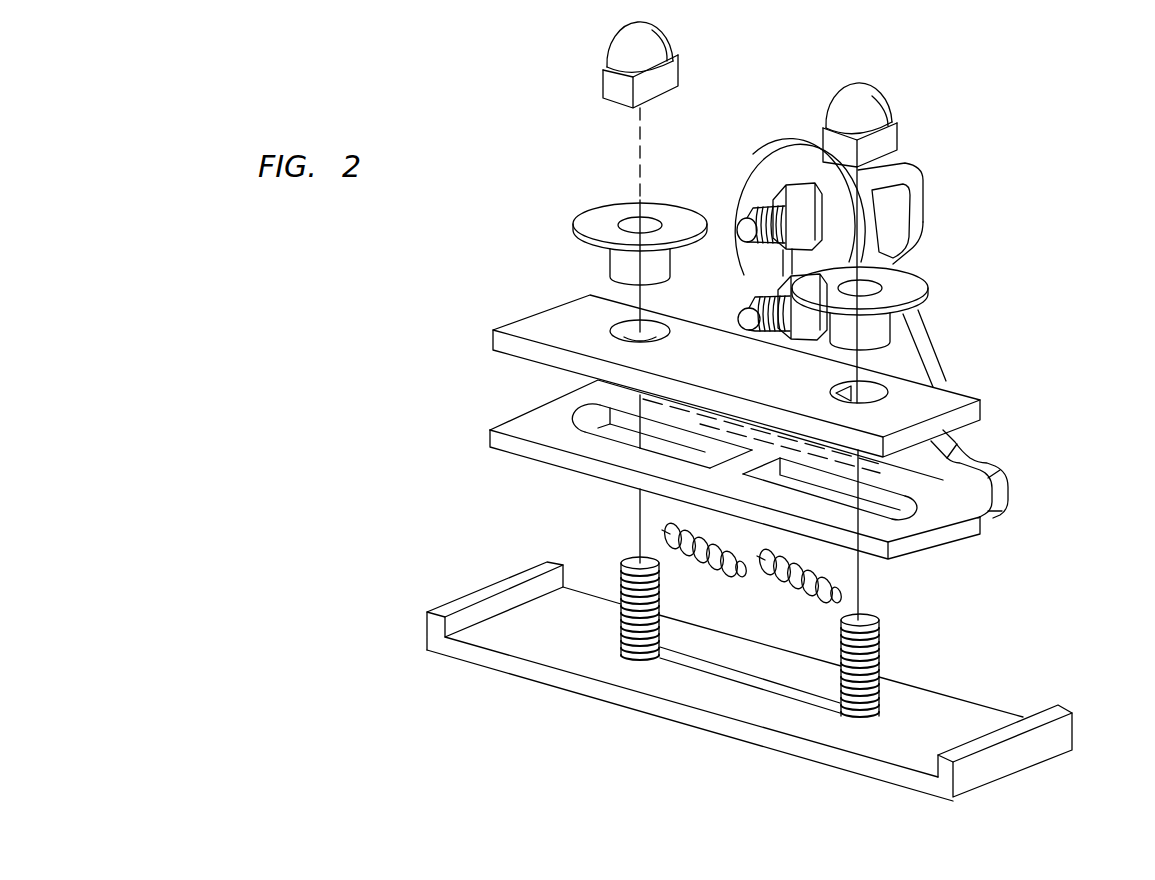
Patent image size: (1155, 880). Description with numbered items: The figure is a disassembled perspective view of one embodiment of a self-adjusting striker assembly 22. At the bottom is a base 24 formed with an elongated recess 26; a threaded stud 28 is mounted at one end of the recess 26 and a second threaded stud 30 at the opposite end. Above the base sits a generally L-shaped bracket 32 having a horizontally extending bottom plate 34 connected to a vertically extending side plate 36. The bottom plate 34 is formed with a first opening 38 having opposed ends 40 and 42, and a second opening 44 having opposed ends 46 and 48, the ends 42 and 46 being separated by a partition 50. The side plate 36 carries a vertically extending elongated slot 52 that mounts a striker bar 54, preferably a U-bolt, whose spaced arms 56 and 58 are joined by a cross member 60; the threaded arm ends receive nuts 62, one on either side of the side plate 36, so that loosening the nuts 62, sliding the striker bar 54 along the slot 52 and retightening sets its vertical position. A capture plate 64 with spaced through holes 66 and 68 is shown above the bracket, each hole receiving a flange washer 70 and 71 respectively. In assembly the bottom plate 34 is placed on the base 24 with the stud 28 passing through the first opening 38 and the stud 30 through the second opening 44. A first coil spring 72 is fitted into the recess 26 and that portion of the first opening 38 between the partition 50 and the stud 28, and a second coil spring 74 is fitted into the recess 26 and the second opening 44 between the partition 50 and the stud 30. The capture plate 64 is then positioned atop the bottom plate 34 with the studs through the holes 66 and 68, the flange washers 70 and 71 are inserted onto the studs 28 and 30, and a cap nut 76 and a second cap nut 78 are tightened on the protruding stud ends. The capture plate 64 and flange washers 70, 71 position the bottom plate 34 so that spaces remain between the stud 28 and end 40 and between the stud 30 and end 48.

The self-adjusting striker assembly 22 is at (1066, 193).
The base 24 is at (374, 596).
The elongated recess 26 is at (775, 690).
The threaded stud 28 is at (622, 630).
The second threaded stud 30 is at (866, 700).
The L-shaped bracket 32 is at (1040, 455).
The bottom plate 34 is at (490, 432).
The side plate 36 is at (918, 345).
The first opening 38 is at (617, 432).
The end of first opening 40 is at (585, 412).
The end of first opening 42 is at (735, 457).
The second opening 44 is at (1002, 506).
The end of second opening 46 is at (763, 478).
The end of second opening 48 is at (925, 507).
The partition 50 is at (760, 474).
The elongated slot 52 is at (736, 222).
The striker bar 54 is at (932, 164).
The arm 56 is at (895, 172).
The arm 58 is at (898, 256).
The cross member 60 is at (925, 207).
The nuts 62 is at (792, 182).
The capture plate 64 is at (492, 332).
The through hole 66 is at (627, 324).
The through hole 68 is at (888, 390).
The flange washer 70 is at (592, 214).
The flange washer 71 is at (910, 284).
The first coil spring 72 is at (722, 565).
The second coil spring 74 is at (772, 584).
The cap nut 76 is at (603, 76).
The second cap nut 78 is at (882, 104).